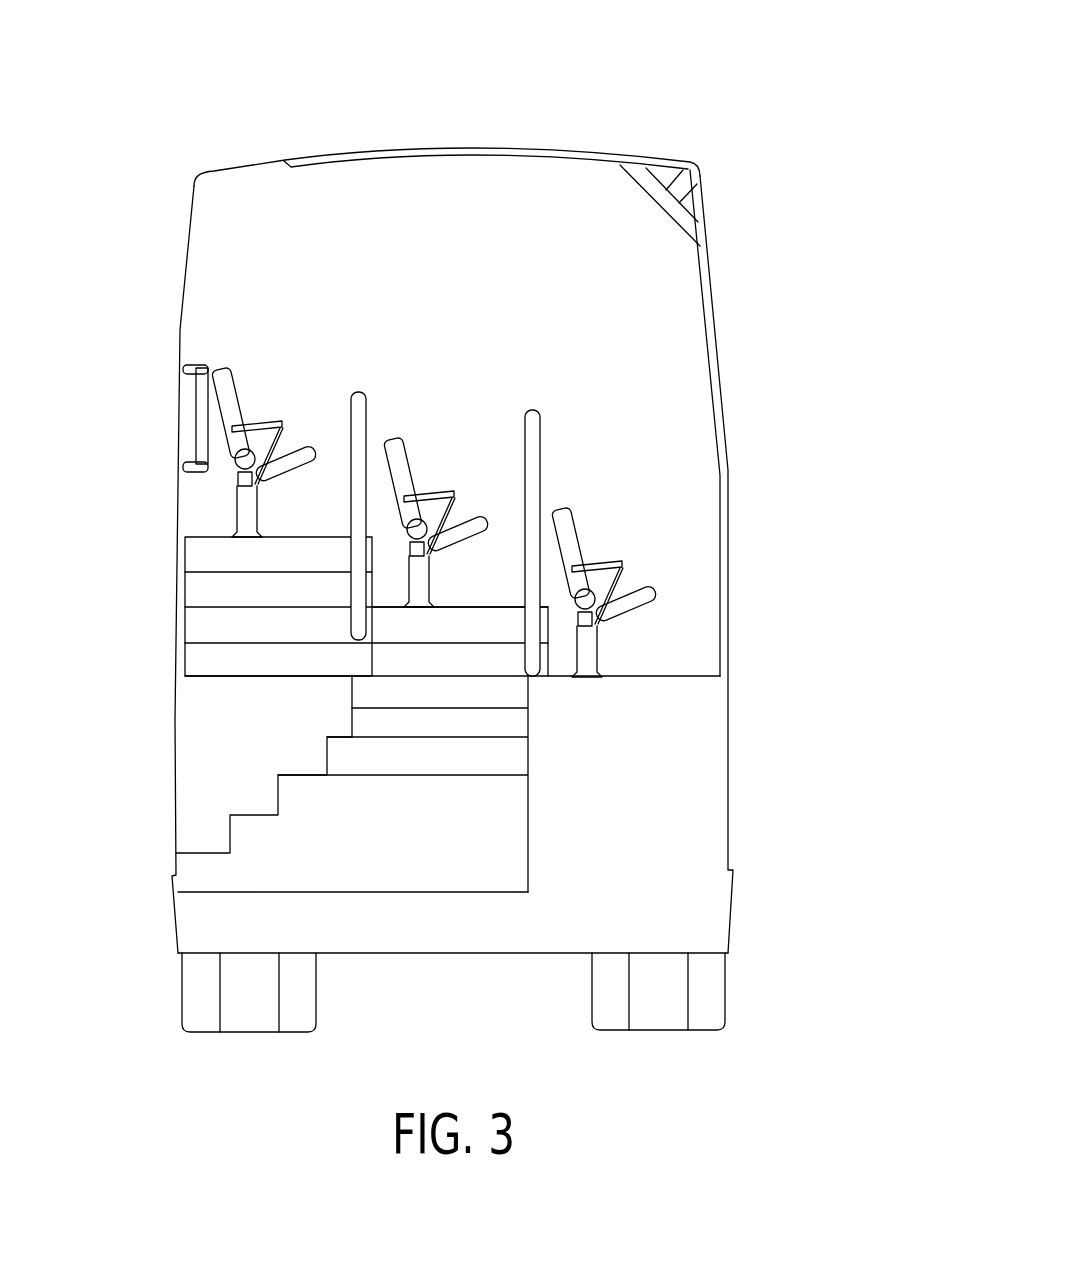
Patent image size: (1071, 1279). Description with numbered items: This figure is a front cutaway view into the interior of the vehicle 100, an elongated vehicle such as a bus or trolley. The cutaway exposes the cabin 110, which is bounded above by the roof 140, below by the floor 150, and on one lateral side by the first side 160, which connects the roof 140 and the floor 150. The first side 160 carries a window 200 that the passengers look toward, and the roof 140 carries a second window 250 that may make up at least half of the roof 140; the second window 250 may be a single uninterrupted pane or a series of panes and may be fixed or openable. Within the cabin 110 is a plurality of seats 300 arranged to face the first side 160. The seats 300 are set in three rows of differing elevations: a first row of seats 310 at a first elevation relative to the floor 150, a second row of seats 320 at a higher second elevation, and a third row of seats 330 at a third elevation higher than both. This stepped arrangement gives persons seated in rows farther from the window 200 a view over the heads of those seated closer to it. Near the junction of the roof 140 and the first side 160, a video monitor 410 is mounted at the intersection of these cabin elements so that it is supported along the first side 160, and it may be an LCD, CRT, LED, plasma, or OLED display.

The vehicle 100 is at (722, 80).
The cabin 110 is at (407, 290).
The roof 140 is at (243, 165).
The floor 150 is at (482, 955).
The first side 160 is at (729, 726).
The window 200 is at (731, 462).
The second window 250 is at (590, 158).
The plurality of seats 300 is at (380, 621).
The first row of seats 310 is at (576, 530).
The second row of seats 320 is at (404, 457).
The third row of seats 330 is at (236, 398).
The video monitor 410 is at (660, 222).